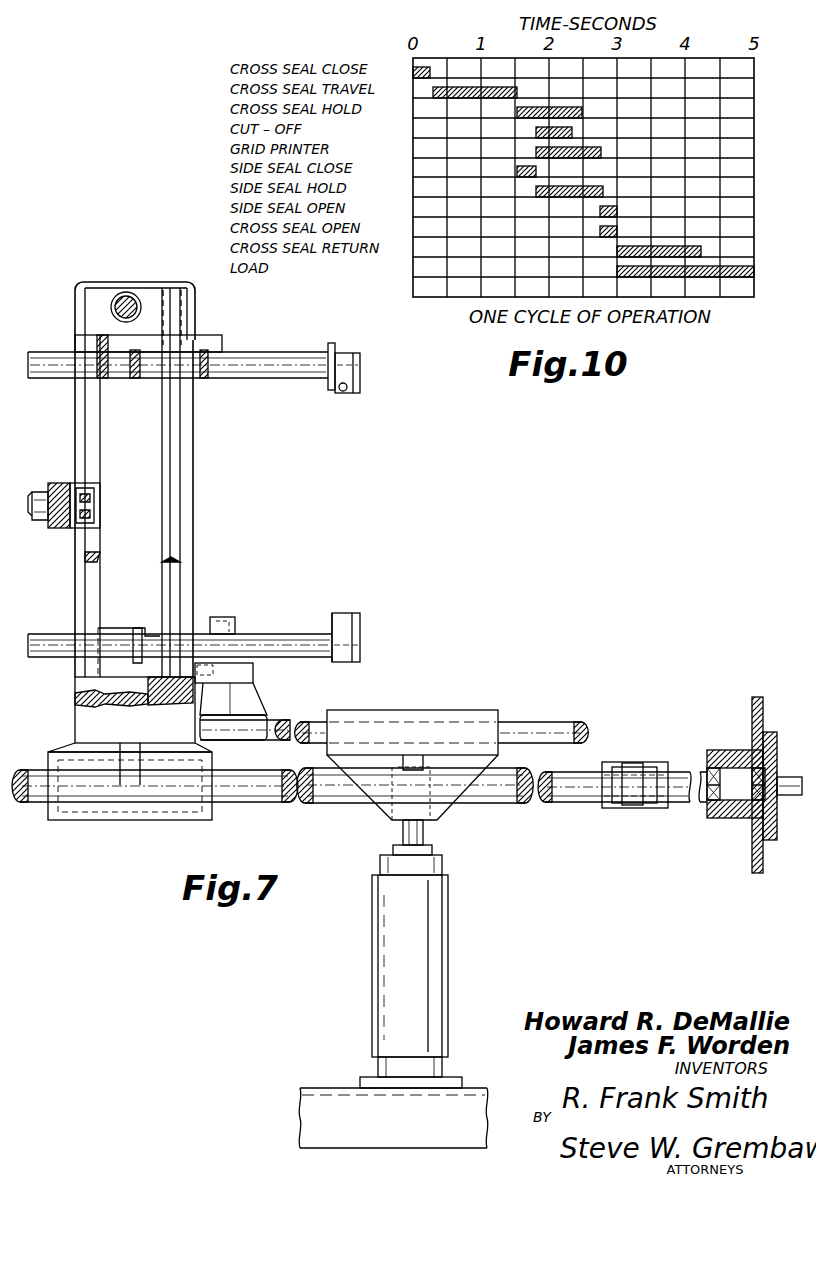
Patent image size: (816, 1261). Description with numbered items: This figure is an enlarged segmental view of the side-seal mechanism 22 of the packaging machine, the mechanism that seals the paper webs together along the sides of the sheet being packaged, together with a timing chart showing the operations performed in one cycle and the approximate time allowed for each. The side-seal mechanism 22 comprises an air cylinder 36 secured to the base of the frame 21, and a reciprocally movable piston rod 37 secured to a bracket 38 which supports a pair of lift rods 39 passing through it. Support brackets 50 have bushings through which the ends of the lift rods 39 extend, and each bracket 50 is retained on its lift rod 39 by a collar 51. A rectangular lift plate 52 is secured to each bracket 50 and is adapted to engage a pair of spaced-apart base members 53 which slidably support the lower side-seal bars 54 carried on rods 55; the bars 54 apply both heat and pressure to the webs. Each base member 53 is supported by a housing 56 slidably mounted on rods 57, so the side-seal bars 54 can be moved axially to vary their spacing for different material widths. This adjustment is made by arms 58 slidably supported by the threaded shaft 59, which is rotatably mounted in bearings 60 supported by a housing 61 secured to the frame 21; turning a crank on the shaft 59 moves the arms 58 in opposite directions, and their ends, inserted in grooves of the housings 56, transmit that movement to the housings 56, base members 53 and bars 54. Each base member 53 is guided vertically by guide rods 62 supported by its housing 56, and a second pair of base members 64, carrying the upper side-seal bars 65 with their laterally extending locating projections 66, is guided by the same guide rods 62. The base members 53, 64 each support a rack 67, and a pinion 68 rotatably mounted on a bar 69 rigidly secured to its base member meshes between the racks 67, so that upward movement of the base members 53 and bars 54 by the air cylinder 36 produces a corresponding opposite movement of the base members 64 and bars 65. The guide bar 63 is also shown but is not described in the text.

The frame 21 is at (348, 1135).
The side-seal mechanism 22 is at (427, 679).
The air cylinder 36 is at (438, 940).
The piston rod 37 is at (423, 830).
The bracket 38 is at (458, 718).
The lift rods 39 is at (534, 728).
The support brackets 50 is at (258, 712).
The collar 51 is at (232, 706).
The lift plate 52 is at (240, 666).
The base members 53 is at (200, 632).
The lower side-seal bars 54 is at (343, 625).
The rods 55 is at (270, 640).
The housing 56 is at (80, 735).
The rods 57 is at (240, 790).
The arms 58 is at (638, 808).
The threaded shaft 59 is at (578, 790).
The bearings 60 is at (742, 816).
The housing 61 is at (718, 750).
The guide rods 62 is at (172, 575).
The guide bar 63 is at (183, 470).
The base members 64 is at (204, 338).
The upper side-seal bars 65 is at (343, 390).
The locating projections 66 is at (357, 372).
The rack 67 is at (94, 438).
The pinion 68 is at (92, 528).
The bar 69 is at (58, 528).